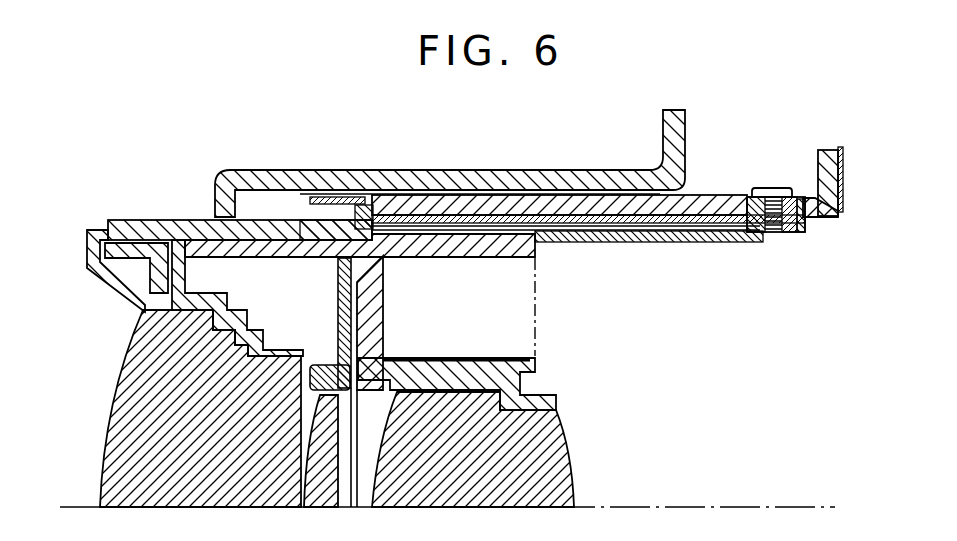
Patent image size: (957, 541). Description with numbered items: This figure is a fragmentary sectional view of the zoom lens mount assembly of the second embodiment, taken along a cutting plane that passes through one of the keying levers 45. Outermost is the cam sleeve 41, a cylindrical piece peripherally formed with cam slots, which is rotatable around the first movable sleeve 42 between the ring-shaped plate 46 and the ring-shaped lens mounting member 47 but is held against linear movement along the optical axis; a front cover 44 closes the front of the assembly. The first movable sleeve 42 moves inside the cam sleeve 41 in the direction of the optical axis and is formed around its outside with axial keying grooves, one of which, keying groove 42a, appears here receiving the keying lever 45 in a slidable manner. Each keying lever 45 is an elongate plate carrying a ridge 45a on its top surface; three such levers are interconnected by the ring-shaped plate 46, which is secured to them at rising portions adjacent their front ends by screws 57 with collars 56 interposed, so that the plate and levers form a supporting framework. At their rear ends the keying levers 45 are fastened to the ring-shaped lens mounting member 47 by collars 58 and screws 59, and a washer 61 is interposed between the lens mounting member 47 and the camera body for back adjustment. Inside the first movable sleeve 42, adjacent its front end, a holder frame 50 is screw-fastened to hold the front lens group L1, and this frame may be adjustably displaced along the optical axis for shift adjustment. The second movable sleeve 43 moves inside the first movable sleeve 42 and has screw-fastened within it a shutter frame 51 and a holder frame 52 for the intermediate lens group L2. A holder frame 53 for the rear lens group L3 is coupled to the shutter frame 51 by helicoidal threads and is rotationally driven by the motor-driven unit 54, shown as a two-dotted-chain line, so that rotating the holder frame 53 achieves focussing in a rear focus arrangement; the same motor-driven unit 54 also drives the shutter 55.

The cam sleeve 41 is at (703, 198).
The first movable sleeve 42 is at (170, 220).
The keying groove 42a is at (330, 220).
The second movable sleeve 43 is at (480, 250).
The front cover 44 is at (572, 180).
The keying lever 45 is at (795, 232).
The ridge 45a is at (657, 226).
The ring-shaped plate 46 is at (323, 197).
The ring-shaped lens mounting member 47 is at (820, 168).
The holder frame 50 is at (242, 308).
The shutter frame 51 is at (380, 297).
The holder frame 52 is at (340, 303).
The holder frame 53 is at (460, 360).
The motor-driven unit 54 is at (538, 318).
The shutter 55 is at (363, 443).
The collar 56 is at (400, 200).
The screw 57 is at (357, 203).
The collar 58 is at (808, 218).
The screw 59 is at (772, 197).
The washer 61 is at (843, 167).
The front lens group L1 is at (130, 443).
The intermediate lens group L2 is at (313, 473).
The rear lens group L3 is at (543, 440).